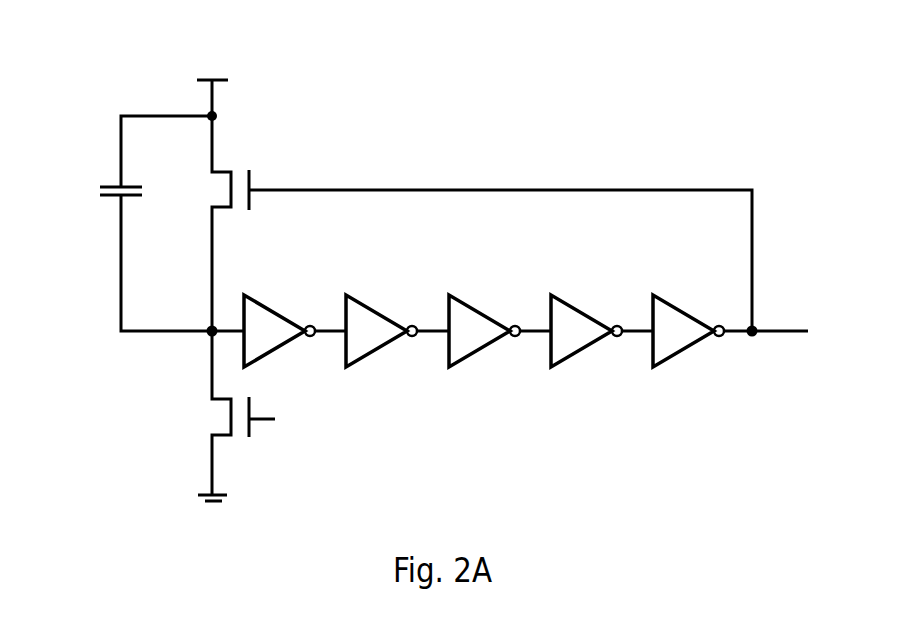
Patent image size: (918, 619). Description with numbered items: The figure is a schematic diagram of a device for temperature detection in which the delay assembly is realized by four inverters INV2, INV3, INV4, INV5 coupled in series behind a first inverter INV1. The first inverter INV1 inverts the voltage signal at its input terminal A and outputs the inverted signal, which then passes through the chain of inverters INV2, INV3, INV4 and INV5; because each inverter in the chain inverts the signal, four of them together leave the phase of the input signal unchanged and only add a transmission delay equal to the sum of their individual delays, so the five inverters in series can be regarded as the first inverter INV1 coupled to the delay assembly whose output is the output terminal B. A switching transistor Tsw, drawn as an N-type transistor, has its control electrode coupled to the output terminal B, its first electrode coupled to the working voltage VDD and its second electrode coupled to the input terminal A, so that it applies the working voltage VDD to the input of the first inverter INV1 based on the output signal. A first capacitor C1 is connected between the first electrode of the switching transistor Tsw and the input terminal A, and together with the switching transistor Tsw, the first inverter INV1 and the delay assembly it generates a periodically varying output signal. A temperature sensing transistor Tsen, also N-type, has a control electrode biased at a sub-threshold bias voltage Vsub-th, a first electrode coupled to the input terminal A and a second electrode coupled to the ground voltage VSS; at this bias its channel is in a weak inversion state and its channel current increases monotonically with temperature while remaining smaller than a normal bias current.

The working voltage VDD is at (212, 86).
The ground voltage VSS is at (213, 511).
The first capacitor C1 is at (146, 223).
The switching transistor Tsw is at (220, 223).
The temperature sensing transistor Tsen is at (217, 413).
The sub-threshold bias voltage Vsub-th is at (289, 418).
The input terminal A is at (218, 321).
The output terminal B is at (528, 263).
The first inverter INV1 is at (294, 318).
The inverter INV2 is at (397, 318).
The inverter INV3 is at (499, 318).
The inverter INV4 is at (601, 318).
The inverter INV5 is at (702, 318).